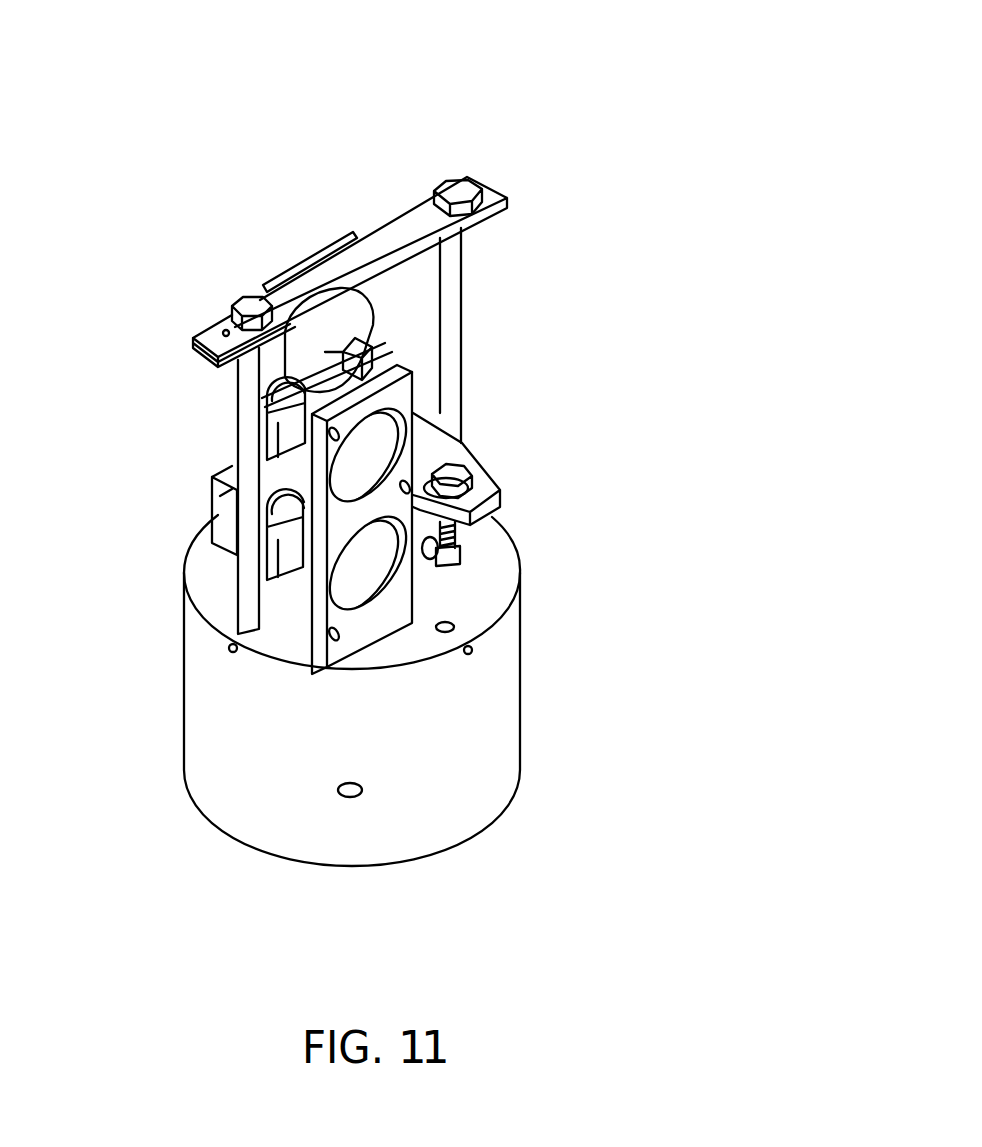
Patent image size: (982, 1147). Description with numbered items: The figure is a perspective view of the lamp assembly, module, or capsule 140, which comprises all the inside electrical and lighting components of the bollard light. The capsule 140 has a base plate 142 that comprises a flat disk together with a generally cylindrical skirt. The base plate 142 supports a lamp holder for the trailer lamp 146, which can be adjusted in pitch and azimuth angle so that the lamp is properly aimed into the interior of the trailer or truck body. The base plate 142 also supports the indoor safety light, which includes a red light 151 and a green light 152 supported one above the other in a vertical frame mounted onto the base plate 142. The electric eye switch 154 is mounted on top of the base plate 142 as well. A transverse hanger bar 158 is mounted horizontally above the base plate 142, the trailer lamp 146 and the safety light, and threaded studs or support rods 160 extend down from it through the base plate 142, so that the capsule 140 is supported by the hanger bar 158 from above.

The lamp assembly 140 is at (668, 670).
The base plate 142 is at (480, 590).
The trailer lamp 146 is at (390, 323).
The red light 151 is at (375, 575).
The green light 152 is at (370, 457).
The electric eye switch 154 is at (224, 521).
The hanger bar 158 is at (397, 237).
The support rods 160 is at (450, 316).